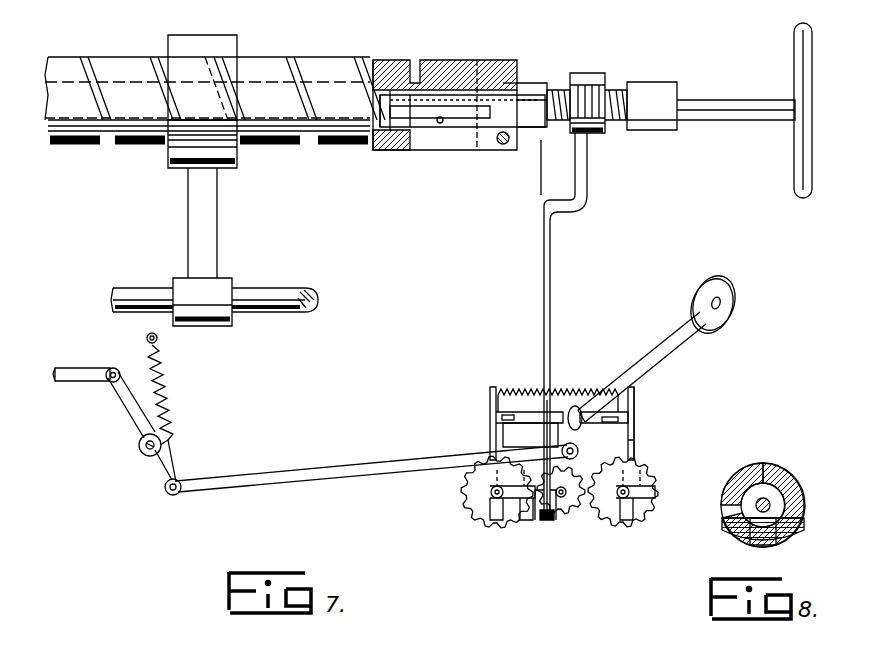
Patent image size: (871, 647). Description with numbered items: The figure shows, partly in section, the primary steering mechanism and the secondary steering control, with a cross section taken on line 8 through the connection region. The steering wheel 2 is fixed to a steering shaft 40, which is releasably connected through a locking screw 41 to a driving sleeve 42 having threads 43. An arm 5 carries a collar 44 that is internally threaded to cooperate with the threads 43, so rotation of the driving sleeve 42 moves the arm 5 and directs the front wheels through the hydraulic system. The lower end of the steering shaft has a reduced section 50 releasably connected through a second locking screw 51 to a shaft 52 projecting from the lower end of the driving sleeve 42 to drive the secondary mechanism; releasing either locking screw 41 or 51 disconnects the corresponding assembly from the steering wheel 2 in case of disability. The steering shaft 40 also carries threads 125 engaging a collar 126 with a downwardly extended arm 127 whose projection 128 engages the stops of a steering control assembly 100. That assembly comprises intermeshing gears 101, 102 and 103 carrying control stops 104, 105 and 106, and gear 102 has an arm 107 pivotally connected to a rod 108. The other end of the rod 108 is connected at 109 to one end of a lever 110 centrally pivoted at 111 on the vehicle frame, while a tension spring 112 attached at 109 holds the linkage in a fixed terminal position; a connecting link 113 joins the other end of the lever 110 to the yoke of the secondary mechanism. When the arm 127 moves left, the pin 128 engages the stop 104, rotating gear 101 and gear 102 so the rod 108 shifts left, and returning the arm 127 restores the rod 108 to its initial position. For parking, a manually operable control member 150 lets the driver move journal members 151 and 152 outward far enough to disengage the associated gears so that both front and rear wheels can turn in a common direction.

In FIG. 7, the steering wheel 2 is at (797, 165).
In FIG. 7, the arm 5 is at (205, 216).
In FIG. 7, the section line 8— 8 is at (462, 47).
In FIG. 7, the steering shaft 40 is at (700, 122).
In FIG. 7, the locking screw 41 is at (507, 140).
In FIG. 8, the locking screw 41 is at (748, 542).
In FIG. 7, the driving sleeve 42 is at (287, 158).
In FIG. 8, the driving sleeve 42 is at (755, 465).
In FIG. 7, the threads 43 is at (246, 160).
In FIG. 7, the collar 44 is at (162, 165).
In FIG. 7, the reduced section 50 is at (420, 150).
In FIG. 8, the reduced section 50 is at (758, 500).
In FIG. 7, the locking screw 51 is at (447, 132).
In FIG. 8, the locking screw 51 is at (745, 518).
In FIG. 7, the shaft 52 is at (392, 60).
In FIG. 8, the shaft 52 is at (745, 505).
In FIG. 7, the steering control assembly 100 is at (490, 395).
In FIG. 7, the gear 101 is at (485, 460).
In FIG. 7, the gear 102 is at (520, 518).
In FIG. 7, the gear 103 is at (610, 520).
In FIG. 7, the control stop 104 is at (503, 525).
In FIG. 7, the control stop 105 is at (565, 520).
In FIG. 7, the control stop 106 is at (645, 520).
In FIG. 7, the arm 107 is at (578, 460).
In FIG. 7, the rod 108 is at (305, 490).
In FIG. 7, the connection 109 is at (166, 494).
In FIG. 7, the lever 110 is at (120, 418).
In FIG. 7, the pivot 111 is at (138, 452).
In FIG. 7, the tension spring 112 is at (168, 397).
In FIG. 7, the connecting link 113 is at (85, 370).
In FIG. 7, the threads 125 is at (612, 78).
In FIG. 7, the collar 126 is at (598, 138).
In FIG. 7, the arm 127 is at (562, 210).
In FIG. 7, the projection 128 is at (548, 525).
In FIG. 7, the manually operable control member 150 is at (650, 345).
In FIG. 7, the journal member 151 is at (634, 440).
In FIG. 7, the journal member 152 is at (490, 428).